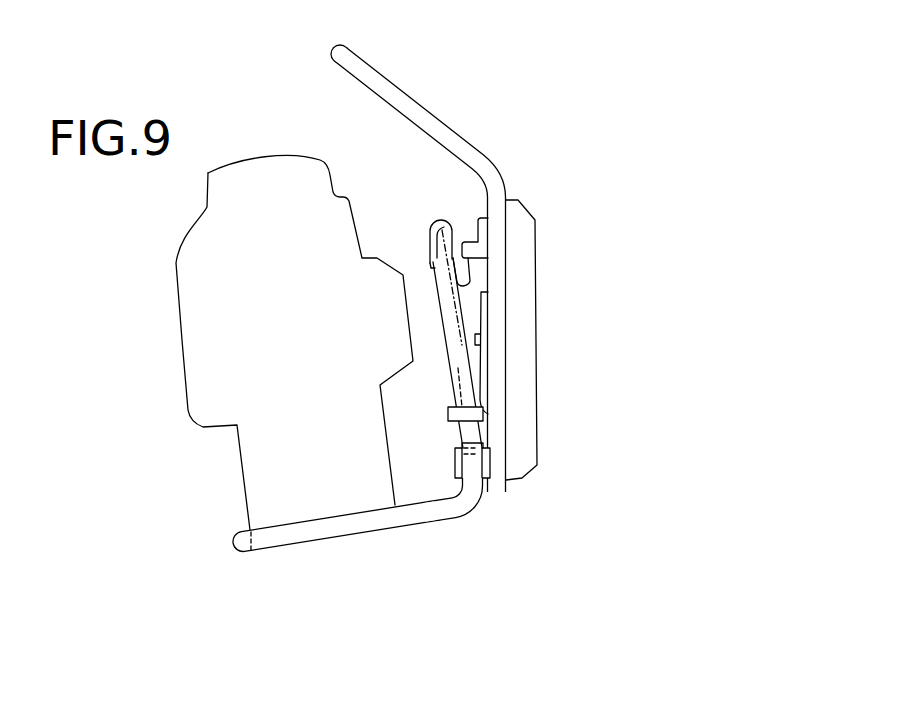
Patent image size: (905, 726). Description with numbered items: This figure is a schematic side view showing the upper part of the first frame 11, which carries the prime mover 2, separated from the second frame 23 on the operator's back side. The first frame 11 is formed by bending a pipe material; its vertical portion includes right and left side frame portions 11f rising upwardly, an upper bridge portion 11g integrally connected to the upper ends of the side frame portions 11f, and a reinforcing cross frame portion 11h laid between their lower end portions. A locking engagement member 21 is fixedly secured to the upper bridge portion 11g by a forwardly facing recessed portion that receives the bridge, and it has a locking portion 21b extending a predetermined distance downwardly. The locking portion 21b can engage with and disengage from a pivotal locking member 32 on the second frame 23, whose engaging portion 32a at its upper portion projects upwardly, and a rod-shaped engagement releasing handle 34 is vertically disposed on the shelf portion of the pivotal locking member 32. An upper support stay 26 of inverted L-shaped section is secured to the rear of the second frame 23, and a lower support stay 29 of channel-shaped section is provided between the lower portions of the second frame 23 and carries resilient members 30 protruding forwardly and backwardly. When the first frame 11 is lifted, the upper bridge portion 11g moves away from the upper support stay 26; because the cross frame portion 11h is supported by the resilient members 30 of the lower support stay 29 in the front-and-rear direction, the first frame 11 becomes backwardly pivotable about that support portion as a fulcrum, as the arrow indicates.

The prime mover 2 is at (205, 333).
The first frame 11 is at (352, 524).
The side frame portion 11f is at (462, 328).
The upper bridge portion 11g is at (457, 205).
The reinforcing cross frame portion 11h is at (480, 497).
The locking engagement member 21 is at (469, 261).
The locking portion 21b is at (469, 261).
The second frame 23 is at (478, 123).
The upper support stay 26 is at (492, 226).
The lower support stay 29 is at (487, 443).
The resilient member 30 is at (455, 461).
The pivotal locking member 32 is at (490, 373).
The engaging portion 32a is at (497, 292).
The engagement releasing handle 34 is at (450, 406).